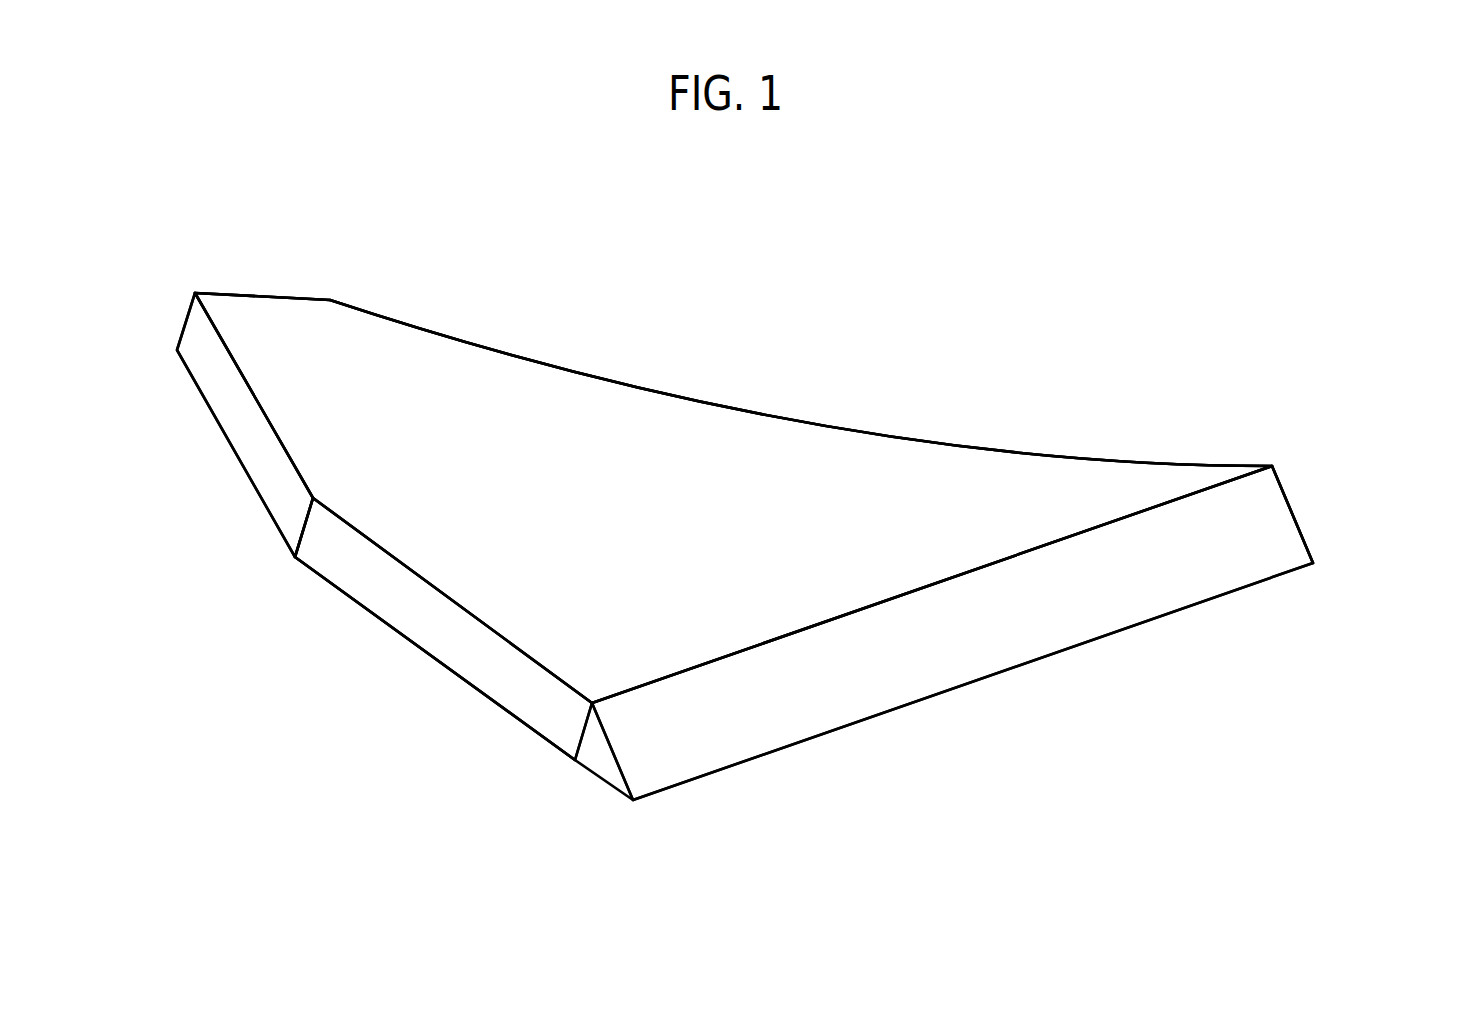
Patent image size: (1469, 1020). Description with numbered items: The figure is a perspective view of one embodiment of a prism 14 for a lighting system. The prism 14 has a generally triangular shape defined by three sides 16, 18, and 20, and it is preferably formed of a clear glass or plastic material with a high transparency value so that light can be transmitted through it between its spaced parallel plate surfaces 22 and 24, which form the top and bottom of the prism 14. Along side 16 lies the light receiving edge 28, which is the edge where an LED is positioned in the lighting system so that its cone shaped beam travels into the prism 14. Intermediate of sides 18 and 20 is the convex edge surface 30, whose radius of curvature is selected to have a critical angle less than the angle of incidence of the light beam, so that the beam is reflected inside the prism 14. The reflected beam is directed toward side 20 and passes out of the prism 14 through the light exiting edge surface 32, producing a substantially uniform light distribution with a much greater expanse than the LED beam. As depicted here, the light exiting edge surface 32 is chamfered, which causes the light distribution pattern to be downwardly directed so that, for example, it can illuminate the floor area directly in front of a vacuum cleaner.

The prism 14 is at (810, 425).
The side 16 is at (426, 612).
The side 18 is at (285, 293).
The side 20 is at (1265, 526).
The plate surface 22 is at (733, 498).
The plate surface 24 is at (493, 705).
The light receiving edge 28 is at (252, 432).
The convex edge surface 30 is at (538, 364).
The light exiting edge surface 32 is at (958, 635).